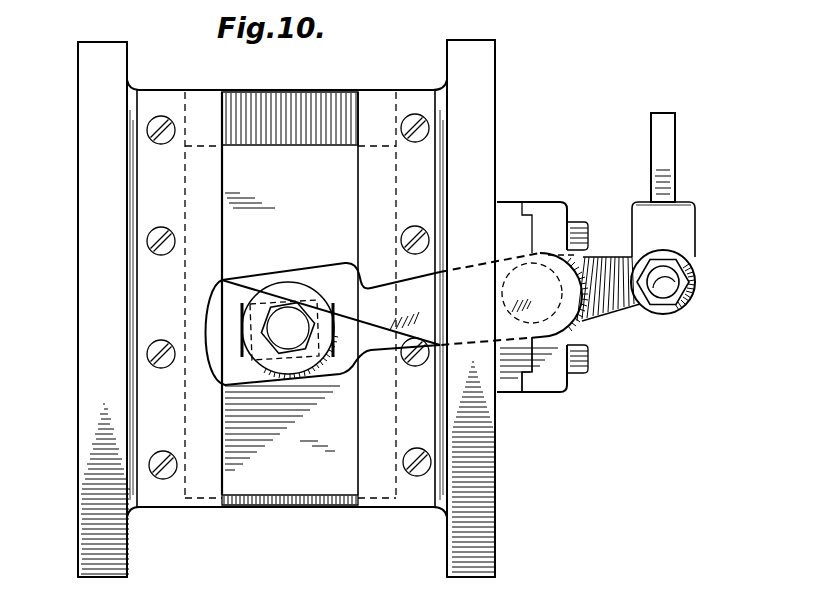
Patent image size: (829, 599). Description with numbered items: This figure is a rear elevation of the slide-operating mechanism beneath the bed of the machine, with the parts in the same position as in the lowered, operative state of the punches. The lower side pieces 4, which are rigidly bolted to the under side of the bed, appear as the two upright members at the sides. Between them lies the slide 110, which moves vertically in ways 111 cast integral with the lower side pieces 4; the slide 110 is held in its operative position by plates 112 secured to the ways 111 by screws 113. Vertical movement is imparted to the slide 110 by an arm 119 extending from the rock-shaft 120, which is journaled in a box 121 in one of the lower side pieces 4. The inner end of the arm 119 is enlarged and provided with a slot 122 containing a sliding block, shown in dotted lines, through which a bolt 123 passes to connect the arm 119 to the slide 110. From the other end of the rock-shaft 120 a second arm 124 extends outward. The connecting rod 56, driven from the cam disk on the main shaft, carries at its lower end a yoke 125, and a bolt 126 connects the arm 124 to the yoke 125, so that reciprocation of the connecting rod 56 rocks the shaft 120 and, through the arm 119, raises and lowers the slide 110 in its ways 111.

The lower side pieces 4 is at (82, 445).
The connecting rod 56 is at (667, 163).
The slide 110 is at (290, 293).
The ways 111 is at (224, 96).
The plates 112 is at (173, 497).
The screws 113 is at (415, 227).
The arm 119 is at (397, 319).
The rock-shaft 120 is at (585, 322).
The box 121 is at (527, 370).
The slot 122 is at (244, 303).
The bolt 123 is at (288, 318).
The arm 124 is at (604, 257).
The yoke 125 is at (686, 231).
The bolt 126 is at (668, 283).